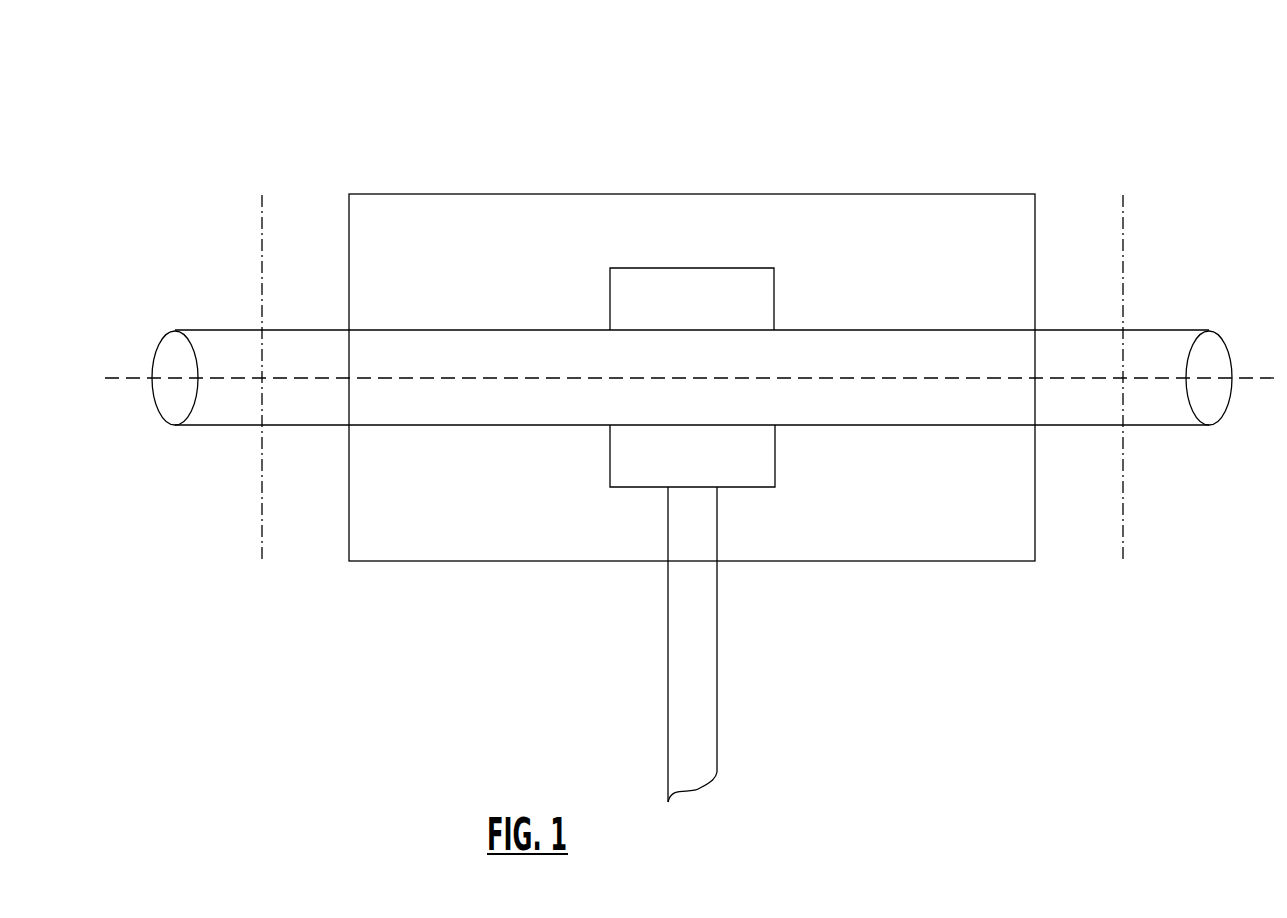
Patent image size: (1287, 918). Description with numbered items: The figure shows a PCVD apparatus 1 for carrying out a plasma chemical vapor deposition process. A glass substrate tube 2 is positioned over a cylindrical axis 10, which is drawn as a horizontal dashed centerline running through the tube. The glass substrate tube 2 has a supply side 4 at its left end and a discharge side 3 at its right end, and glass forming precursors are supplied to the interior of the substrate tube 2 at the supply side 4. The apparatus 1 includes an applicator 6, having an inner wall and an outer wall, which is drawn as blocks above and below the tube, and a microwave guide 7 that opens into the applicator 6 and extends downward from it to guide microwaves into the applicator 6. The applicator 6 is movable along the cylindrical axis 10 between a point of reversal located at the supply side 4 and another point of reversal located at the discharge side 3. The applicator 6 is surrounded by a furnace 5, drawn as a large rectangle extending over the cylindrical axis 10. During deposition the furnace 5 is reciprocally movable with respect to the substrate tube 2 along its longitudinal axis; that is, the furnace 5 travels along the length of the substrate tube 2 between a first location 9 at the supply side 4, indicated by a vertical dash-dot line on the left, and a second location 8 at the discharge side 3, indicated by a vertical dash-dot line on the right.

The PCVD apparatus 1 is at (330, 118).
The glass substrate tube 2 is at (233, 427).
The discharge side 3 is at (1230, 348).
The supply side 4 is at (156, 355).
The furnace 5 is at (973, 194).
The applicator 6 is at (708, 278).
The microwave guide 7 is at (710, 685).
The second location 8 is at (1124, 266).
The first location 9 is at (260, 255).
The cylindrical axis 10 is at (948, 415).